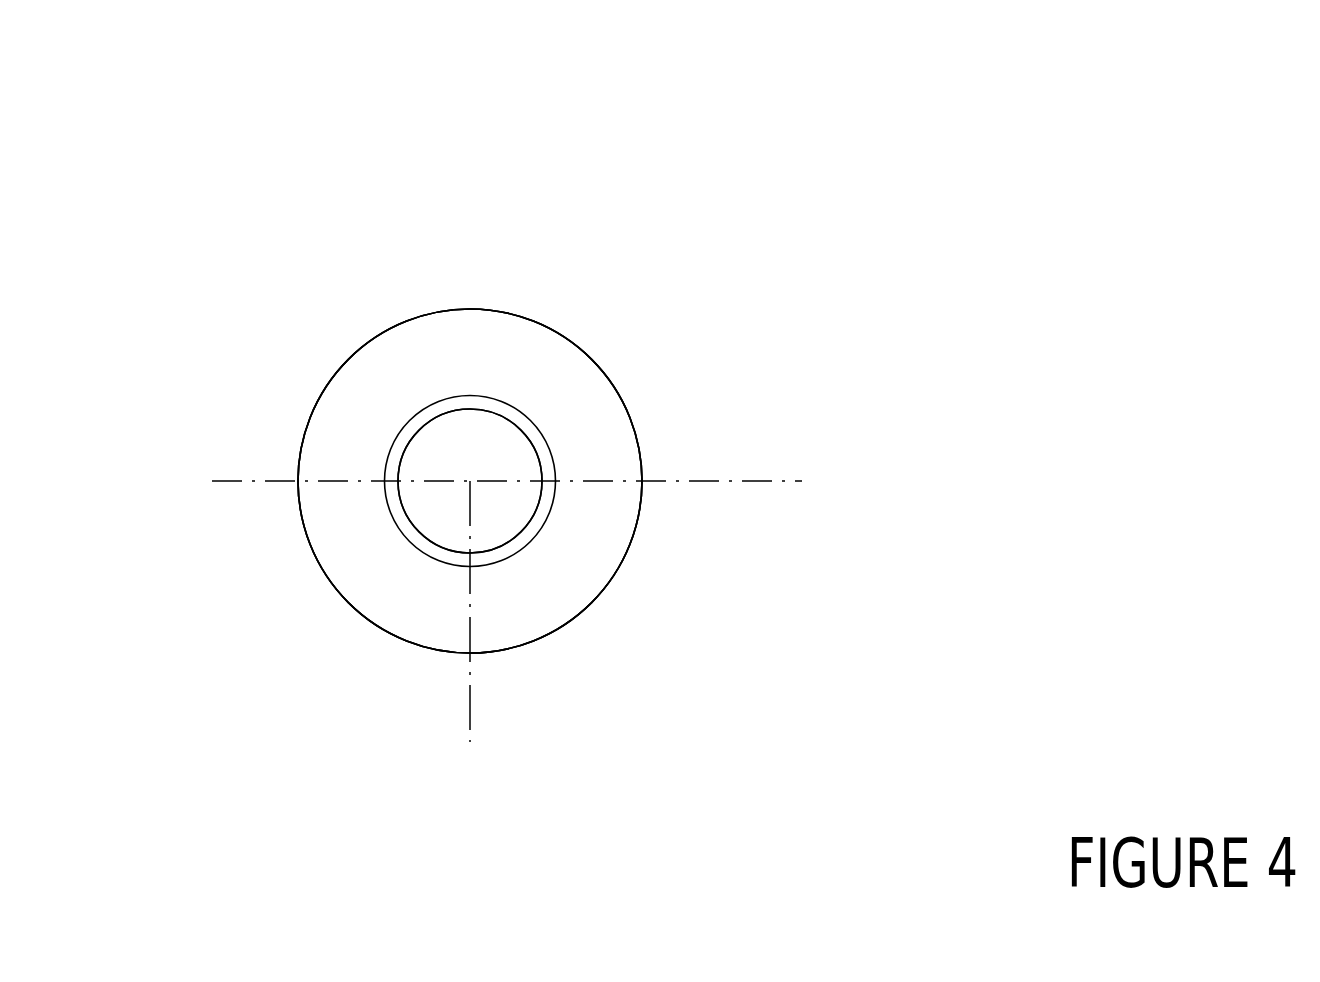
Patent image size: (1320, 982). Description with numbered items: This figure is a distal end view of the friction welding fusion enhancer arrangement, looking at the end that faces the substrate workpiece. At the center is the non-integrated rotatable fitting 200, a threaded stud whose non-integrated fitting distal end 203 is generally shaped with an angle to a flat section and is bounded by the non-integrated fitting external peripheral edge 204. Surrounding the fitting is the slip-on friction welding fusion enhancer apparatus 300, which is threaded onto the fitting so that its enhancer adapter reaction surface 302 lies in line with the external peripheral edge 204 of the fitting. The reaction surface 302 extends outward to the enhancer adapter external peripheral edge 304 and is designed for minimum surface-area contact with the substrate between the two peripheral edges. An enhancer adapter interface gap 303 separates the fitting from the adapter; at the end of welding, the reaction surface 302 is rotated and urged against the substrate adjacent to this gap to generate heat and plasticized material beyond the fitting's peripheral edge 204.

The non-integrated rotatable fitting 200 is at (346, 302).
The non-integrated fitting distal end 203 is at (470, 481).
The non-integrated fitting external peripheral edge 204 is at (414, 295).
The friction welding fusion enhancer apparatus 300 is at (624, 345).
The enhancer adapter reaction surface 302 is at (699, 345).
The enhancer adapter interface gap 303 is at (824, 365).
The enhancer adapter external peripheral edge 304 is at (548, 345).